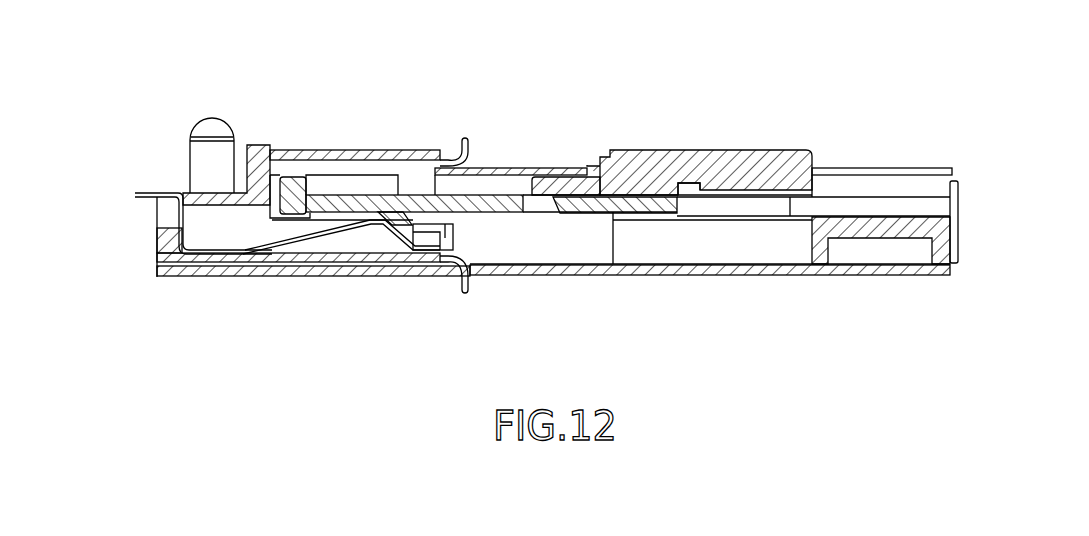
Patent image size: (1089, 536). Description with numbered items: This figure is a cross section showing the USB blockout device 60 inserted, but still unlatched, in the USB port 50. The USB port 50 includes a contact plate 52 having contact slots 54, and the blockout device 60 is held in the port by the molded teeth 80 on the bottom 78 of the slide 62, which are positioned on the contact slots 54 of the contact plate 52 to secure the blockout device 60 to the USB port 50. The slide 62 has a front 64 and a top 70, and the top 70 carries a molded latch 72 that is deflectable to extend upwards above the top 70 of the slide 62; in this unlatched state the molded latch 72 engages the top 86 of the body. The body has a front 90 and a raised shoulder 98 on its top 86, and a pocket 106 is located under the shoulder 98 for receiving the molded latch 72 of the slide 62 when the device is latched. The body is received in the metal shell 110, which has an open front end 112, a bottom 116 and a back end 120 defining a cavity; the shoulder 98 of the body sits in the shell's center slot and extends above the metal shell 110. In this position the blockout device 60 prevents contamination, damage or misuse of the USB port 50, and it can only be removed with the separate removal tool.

The USB port 50 is at (262, 88).
The contact plate 52 is at (453, 237).
The contact slots 54 is at (343, 231).
The USB blockout device 60 is at (710, 88).
The slide 62 is at (280, 180).
The front 64 is at (290, 197).
The top 70 is at (349, 192).
The molded latch 72 is at (596, 208).
The bottom 78 is at (311, 214).
The molded teeth 80 is at (401, 219).
The top 86 is at (547, 183).
The front 90 is at (432, 179).
The raised shoulder 98 is at (641, 150).
The pocket 106 is at (693, 188).
The metal shell 110 is at (918, 170).
The open front end 112 is at (421, 162).
The bottom 116 is at (768, 277).
The back end 120 is at (960, 198).